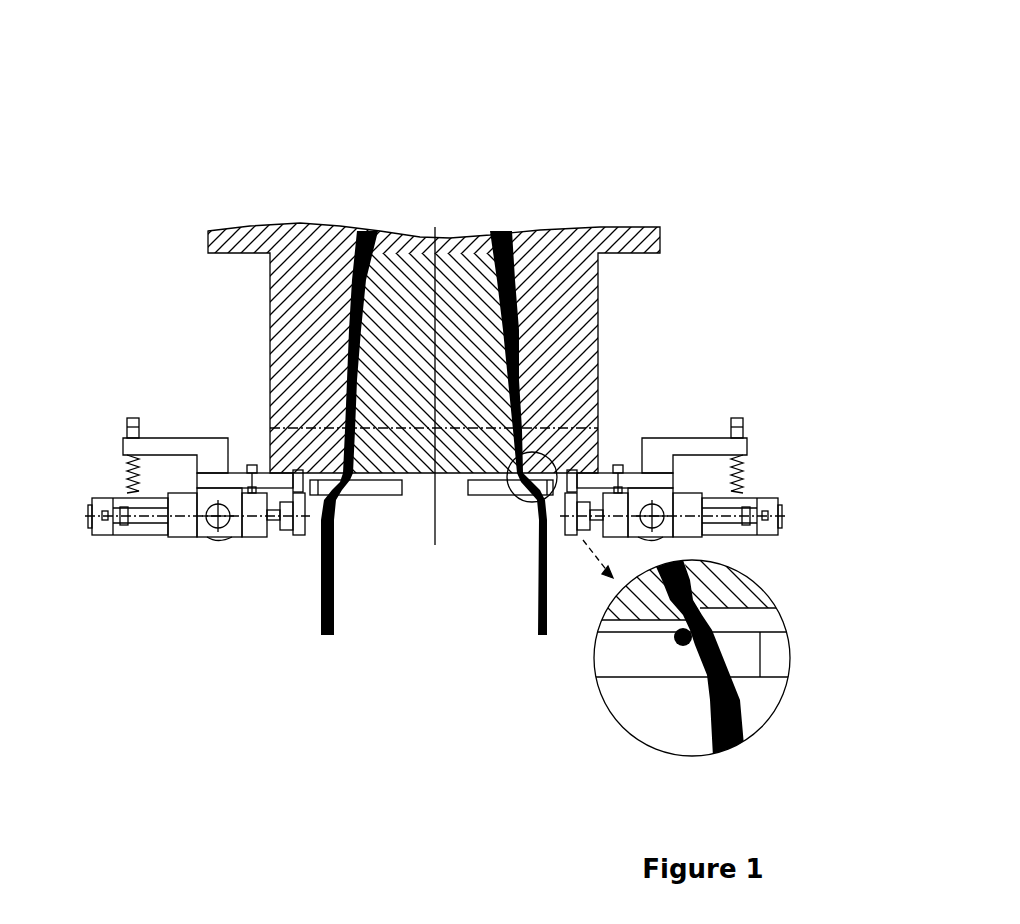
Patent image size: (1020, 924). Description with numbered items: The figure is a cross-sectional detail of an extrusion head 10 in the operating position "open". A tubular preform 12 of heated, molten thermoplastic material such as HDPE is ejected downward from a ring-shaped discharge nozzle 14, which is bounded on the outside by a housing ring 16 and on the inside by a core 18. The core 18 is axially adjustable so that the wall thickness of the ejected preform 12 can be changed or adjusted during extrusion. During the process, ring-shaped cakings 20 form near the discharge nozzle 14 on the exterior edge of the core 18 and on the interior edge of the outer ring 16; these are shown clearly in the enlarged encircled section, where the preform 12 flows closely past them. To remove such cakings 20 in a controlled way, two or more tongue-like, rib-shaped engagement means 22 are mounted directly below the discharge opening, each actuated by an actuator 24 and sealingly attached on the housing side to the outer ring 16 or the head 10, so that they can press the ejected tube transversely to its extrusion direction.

The extrusion head 10 is at (544, 191).
The tubular preform 12 is at (320, 600).
The discharge nozzle 14 is at (516, 514).
The housing ring 16 is at (552, 440).
The core 18 is at (395, 275).
The ring-shaped cakings 20 is at (673, 645).
The engagement means 22 is at (365, 488).
The actuator 24 is at (253, 522).